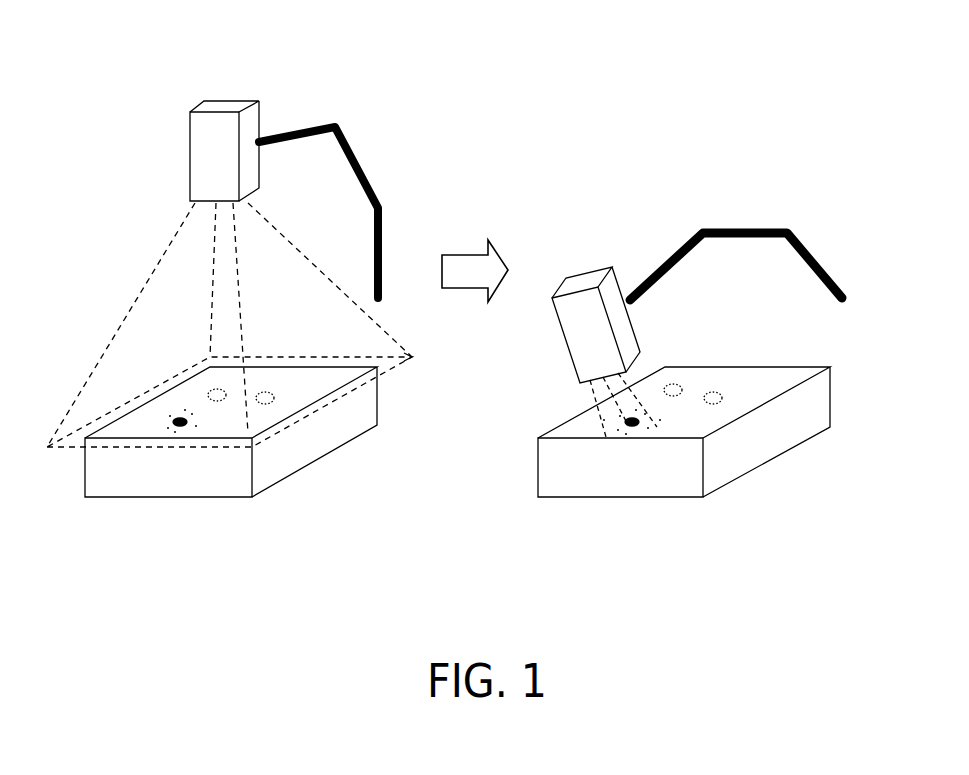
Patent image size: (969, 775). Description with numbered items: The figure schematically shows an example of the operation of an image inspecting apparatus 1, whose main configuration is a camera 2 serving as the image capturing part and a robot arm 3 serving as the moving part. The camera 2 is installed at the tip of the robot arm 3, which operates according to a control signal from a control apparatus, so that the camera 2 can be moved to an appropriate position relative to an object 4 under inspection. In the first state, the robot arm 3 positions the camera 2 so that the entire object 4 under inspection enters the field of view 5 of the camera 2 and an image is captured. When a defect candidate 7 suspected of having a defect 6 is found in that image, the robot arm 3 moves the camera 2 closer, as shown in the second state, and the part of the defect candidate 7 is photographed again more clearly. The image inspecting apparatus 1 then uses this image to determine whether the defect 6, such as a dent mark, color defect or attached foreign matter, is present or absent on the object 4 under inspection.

The image inspecting apparatus 1 is at (396, 115).
The camera 2 is at (240, 100).
The robot arm 3 is at (378, 192).
The object under inspection 4 is at (348, 425).
The field of view 5 is at (395, 372).
The defect 6 is at (183, 416).
The defect candidate 7 is at (178, 418).